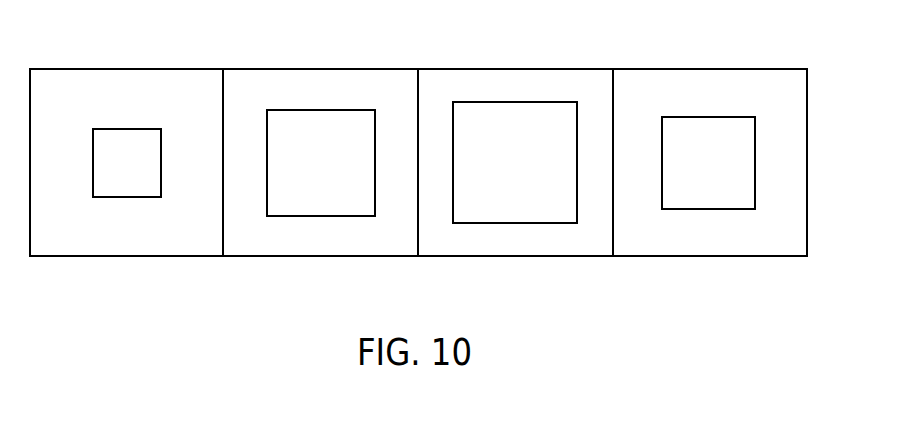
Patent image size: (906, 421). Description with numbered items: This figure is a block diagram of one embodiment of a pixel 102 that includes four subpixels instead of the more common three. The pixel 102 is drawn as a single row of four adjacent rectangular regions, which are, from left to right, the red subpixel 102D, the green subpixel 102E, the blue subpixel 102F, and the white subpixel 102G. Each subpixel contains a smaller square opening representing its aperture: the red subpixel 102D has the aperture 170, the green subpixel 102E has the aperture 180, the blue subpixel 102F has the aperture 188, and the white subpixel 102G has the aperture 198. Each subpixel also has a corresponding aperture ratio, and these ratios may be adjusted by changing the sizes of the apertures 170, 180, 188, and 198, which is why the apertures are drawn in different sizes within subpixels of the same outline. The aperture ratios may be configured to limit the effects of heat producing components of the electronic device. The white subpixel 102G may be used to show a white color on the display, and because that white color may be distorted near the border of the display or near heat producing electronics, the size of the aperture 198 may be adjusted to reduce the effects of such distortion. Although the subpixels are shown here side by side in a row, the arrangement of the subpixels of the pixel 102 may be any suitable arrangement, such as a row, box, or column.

The pixel 102 is at (150, 37).
The red subpixel 102D is at (113, 275).
The green subpixel 102E is at (308, 275).
The blue subpixel 102F is at (503, 275).
The white subpixel 102G is at (699, 275).
The aperture 170 is at (124, 128).
The aperture 180 is at (314, 110).
The aperture 188 is at (535, 102).
The aperture 198 is at (707, 117).